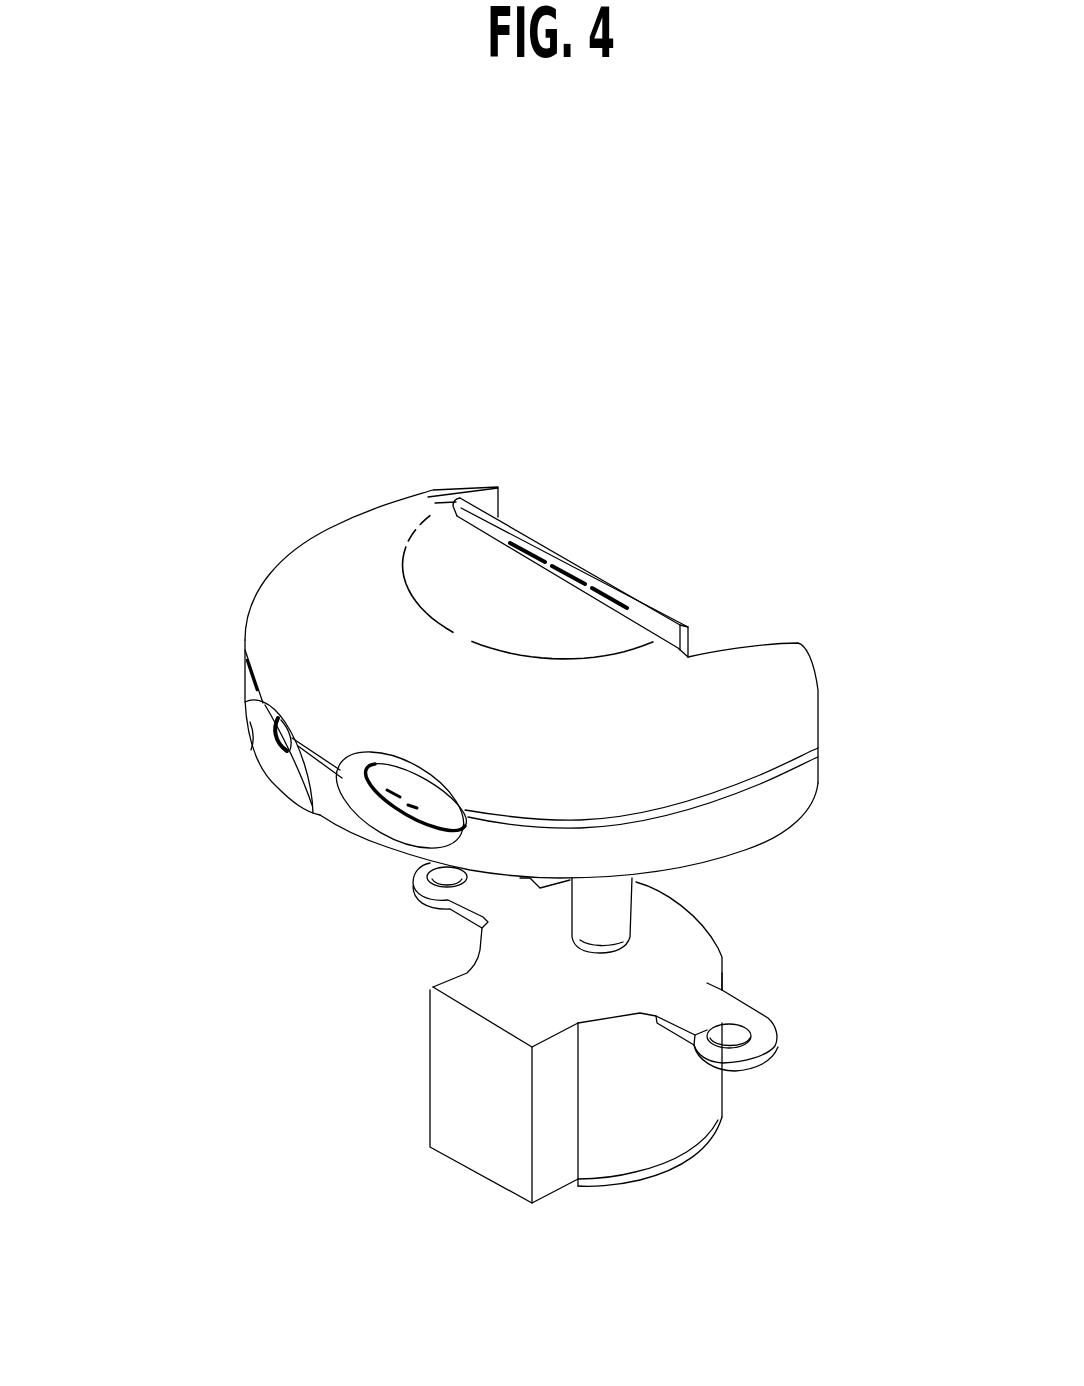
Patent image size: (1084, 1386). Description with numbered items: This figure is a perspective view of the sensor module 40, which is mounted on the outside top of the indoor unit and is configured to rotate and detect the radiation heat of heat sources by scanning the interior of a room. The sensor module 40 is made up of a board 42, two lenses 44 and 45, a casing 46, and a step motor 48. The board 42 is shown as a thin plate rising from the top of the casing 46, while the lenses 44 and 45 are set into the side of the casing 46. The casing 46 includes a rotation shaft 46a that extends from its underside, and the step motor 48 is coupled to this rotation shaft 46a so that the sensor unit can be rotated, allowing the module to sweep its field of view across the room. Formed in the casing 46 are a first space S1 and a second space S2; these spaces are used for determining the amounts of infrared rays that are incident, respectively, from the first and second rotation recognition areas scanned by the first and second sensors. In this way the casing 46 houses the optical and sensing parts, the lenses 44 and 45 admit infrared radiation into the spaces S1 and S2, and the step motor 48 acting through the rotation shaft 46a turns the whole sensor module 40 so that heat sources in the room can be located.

The sensor module 40 is at (622, 462).
The board 42 is at (622, 593).
The lens 44 is at (287, 756).
The lens 45 is at (447, 813).
The casing 46 is at (327, 623).
The rotation shaft 46a is at (600, 953).
The step motor 48 is at (665, 1118).
The first space S1 is at (257, 736).
The second space S2 is at (390, 807).